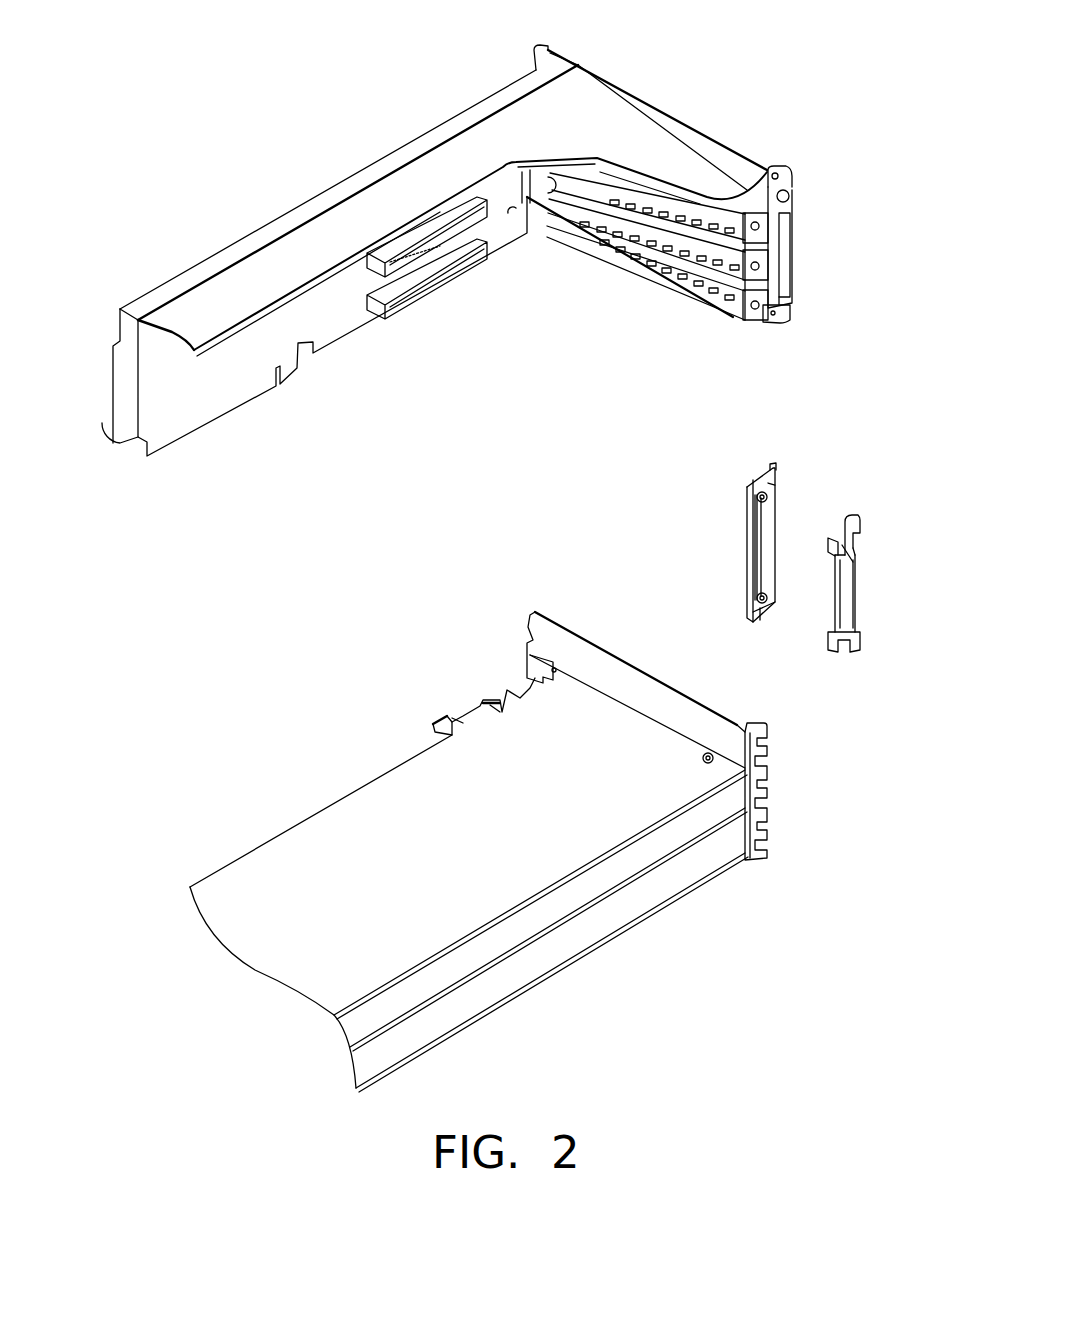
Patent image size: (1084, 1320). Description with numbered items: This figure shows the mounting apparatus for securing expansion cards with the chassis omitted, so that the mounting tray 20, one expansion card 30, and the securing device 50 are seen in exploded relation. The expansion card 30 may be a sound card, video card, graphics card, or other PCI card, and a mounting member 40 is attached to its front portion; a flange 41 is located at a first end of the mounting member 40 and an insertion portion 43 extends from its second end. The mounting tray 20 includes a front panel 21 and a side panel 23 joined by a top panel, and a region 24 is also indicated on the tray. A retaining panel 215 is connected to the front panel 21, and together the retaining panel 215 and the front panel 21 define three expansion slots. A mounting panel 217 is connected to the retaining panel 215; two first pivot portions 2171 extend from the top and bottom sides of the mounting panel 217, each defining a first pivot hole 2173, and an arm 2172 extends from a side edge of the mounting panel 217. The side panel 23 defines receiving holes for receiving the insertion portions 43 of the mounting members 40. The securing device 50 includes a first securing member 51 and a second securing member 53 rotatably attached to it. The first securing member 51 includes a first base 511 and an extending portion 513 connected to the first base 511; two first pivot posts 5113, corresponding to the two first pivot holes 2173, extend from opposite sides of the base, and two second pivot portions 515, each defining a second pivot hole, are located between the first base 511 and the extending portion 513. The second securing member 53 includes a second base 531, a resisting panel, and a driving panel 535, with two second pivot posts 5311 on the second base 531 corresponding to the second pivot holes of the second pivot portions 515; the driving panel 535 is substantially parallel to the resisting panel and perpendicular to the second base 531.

The mounting tray 20 is at (398, 125).
The front panel 21 is at (707, 205).
The retaining panel 215 is at (776, 172).
The mounting panel 217 is at (780, 207).
The first pivot portion 2171 is at (786, 322).
The arm 2172 is at (788, 243).
The first pivot hole 2173 is at (788, 305).
The side panel 23 is at (128, 322).
The side plate 24 is at (650, 196).
The expansion card 30 is at (354, 833).
The mounting member 40 is at (600, 662).
The flange 41 is at (753, 747).
The insertion portion 43 is at (536, 628).
The securing device 50 is at (913, 424).
The first securing member 51 is at (778, 451).
The first base 511 is at (770, 558).
The first pivot post 5113 is at (772, 466).
The extending portion 513 is at (750, 550).
The second pivot portion 515 is at (760, 605).
The second securing member 53 is at (868, 514).
The second base 531 is at (843, 518).
The driving panel 535 is at (847, 607).
The second pivot post 5311 is at (828, 650).